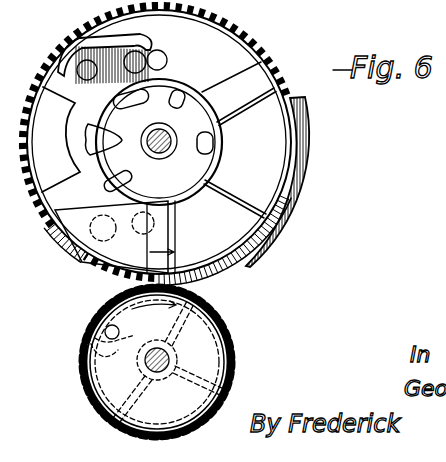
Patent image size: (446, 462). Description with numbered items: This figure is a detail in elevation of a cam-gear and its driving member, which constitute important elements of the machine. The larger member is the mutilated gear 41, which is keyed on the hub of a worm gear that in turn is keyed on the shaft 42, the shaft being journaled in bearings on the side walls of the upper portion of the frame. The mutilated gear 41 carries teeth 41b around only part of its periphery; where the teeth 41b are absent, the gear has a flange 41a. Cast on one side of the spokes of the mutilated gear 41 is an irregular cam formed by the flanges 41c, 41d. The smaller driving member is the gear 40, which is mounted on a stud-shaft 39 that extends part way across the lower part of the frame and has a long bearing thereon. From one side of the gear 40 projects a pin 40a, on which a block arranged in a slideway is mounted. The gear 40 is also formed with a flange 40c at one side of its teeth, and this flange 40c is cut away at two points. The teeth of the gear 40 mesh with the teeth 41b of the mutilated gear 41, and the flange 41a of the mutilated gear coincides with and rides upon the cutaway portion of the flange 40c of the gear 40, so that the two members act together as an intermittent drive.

The stud-shaft 39 is at (166, 356).
The gear 40 is at (240, 345).
The pin 40a is at (104, 331).
The flange 40c is at (238, 362).
The mutilated gear 41 is at (275, 193).
The flange 41a is at (316, 151).
The teeth 41b is at (268, 49).
The flange 41c is at (188, 91).
The flange 41d is at (100, 50).
The shaft 42 is at (97, 180).